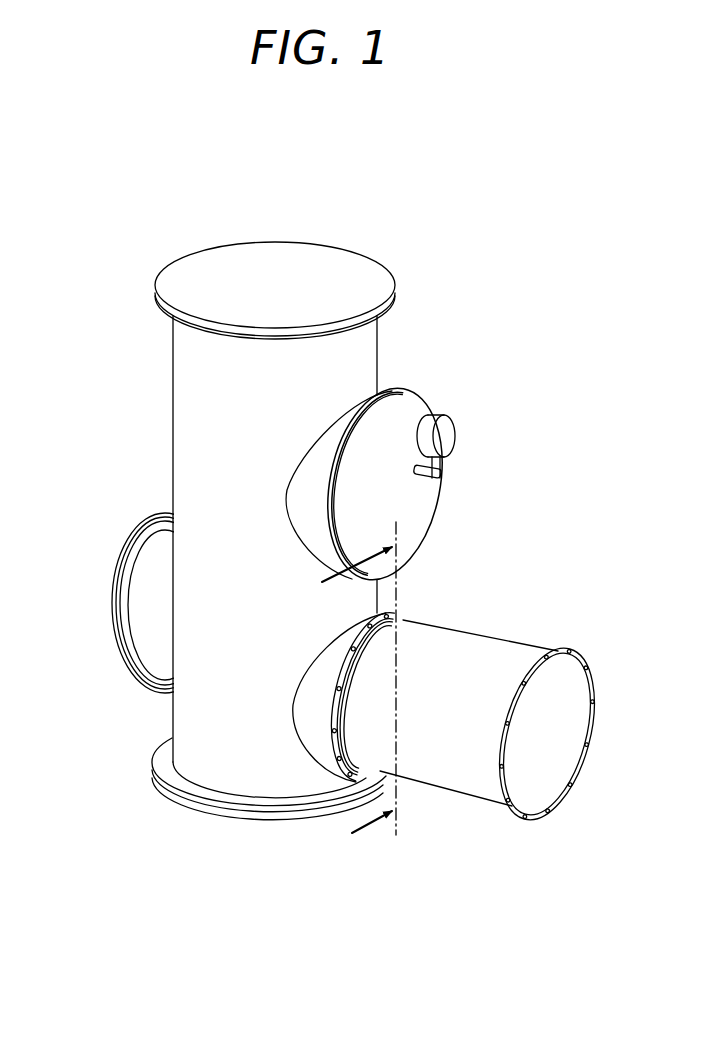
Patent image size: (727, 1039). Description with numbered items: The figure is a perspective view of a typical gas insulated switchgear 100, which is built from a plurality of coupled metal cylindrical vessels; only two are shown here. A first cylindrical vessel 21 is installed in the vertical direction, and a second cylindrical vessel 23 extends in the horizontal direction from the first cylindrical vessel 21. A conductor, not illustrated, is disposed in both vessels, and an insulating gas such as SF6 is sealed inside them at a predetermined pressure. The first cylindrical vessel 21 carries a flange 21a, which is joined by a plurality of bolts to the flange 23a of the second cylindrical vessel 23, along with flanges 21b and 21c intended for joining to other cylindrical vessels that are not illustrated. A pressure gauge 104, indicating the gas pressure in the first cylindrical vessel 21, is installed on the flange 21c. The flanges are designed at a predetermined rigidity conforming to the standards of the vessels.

The gas insulated switchgear 100 is at (281, 221).
The first cylindrical vessel 21 is at (190, 380).
The flange 21a is at (399, 613).
The flange 21b is at (136, 598).
The flange 21c is at (417, 406).
The pressure gauge 104 is at (452, 432).
The second cylindrical vessel 23 is at (497, 652).
The flange 23a is at (409, 618).